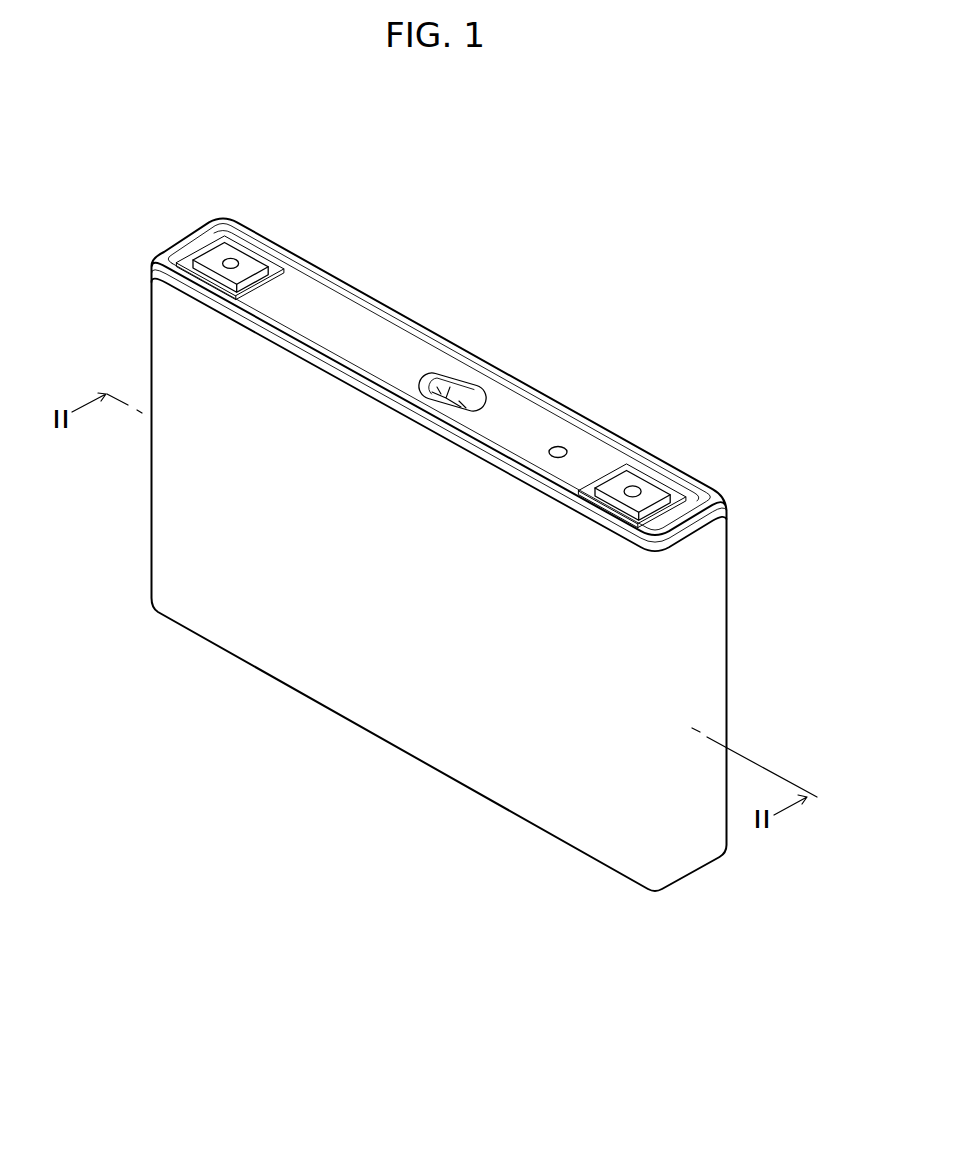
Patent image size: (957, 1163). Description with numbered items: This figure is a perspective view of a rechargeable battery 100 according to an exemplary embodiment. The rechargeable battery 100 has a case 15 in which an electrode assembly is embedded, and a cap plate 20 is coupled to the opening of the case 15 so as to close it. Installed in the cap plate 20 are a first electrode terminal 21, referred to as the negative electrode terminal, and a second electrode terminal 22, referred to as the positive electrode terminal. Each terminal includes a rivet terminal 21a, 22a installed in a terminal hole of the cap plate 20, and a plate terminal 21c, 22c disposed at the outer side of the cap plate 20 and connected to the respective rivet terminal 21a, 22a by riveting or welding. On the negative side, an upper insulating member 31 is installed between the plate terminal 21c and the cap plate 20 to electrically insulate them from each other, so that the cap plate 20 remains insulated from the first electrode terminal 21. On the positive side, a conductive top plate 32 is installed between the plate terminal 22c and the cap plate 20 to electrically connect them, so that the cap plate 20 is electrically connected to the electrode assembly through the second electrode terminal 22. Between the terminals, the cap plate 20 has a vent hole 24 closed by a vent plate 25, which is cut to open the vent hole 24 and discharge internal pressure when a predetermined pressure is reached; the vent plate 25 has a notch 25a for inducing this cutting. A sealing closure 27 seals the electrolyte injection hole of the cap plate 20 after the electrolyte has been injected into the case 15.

The rechargeable battery 100 is at (517, 243).
The case 15 is at (365, 688).
The cap plate 20 is at (353, 328).
The first electrode terminal 21 is at (238, 254).
The rivet terminal 21a is at (224, 258).
The plate terminal 21c is at (255, 261).
The upper insulating member 31 is at (279, 270).
The second electrode terminal 22 is at (636, 480).
The rivet terminal 22a is at (641, 489).
The plate terminal 22c is at (647, 497).
The top plate 32 is at (654, 519).
The vent hole 24 is at (452, 390).
The vent plate 25 is at (461, 405).
The notch 25a is at (467, 410).
The sealing closure 27 is at (562, 449).